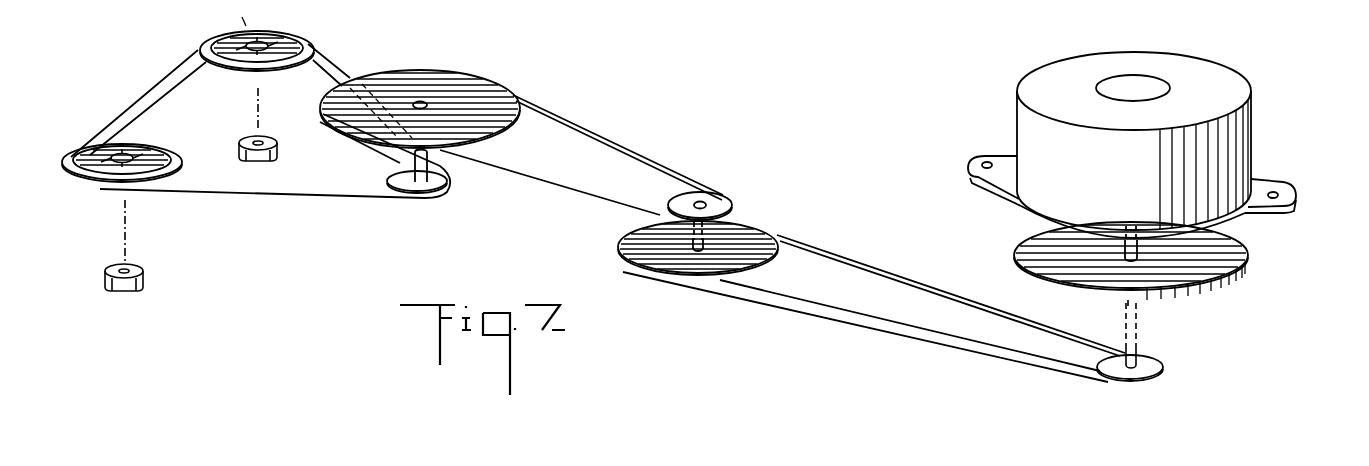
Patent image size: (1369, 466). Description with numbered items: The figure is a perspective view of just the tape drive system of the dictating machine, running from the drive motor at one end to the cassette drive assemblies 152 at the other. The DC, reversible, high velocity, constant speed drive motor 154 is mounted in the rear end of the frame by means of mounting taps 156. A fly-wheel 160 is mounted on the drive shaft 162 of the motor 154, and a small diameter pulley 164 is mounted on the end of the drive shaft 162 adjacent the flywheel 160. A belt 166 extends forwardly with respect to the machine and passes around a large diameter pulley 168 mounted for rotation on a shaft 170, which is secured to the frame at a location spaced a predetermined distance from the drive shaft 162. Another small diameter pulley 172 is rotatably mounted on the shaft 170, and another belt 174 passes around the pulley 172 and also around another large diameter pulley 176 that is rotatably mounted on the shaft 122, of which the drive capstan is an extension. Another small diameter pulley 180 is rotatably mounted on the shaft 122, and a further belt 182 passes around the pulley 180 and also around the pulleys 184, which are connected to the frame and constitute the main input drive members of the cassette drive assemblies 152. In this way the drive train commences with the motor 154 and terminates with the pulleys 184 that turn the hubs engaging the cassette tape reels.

The shaft 122 is at (410, 160).
The cassette drive assemblies 152 is at (197, 34).
The drive motor 154 is at (1250, 112).
The mounting taps 156 is at (983, 160).
The fly-wheel 160 is at (1250, 275).
The drive shaft 162 is at (1140, 328).
The small diameter pulley 164 is at (1165, 370).
The belt 166 is at (976, 348).
The large diameter pulley 168 is at (763, 263).
The shaft 170 is at (712, 233).
The small diameter pulley 172 is at (717, 203).
The belt 174 is at (612, 142).
The large diameter pulley 176 is at (498, 100).
The small diameter pulley 180 is at (448, 186).
The belt 182 is at (378, 196).
The pulleys 184 is at (172, 157).